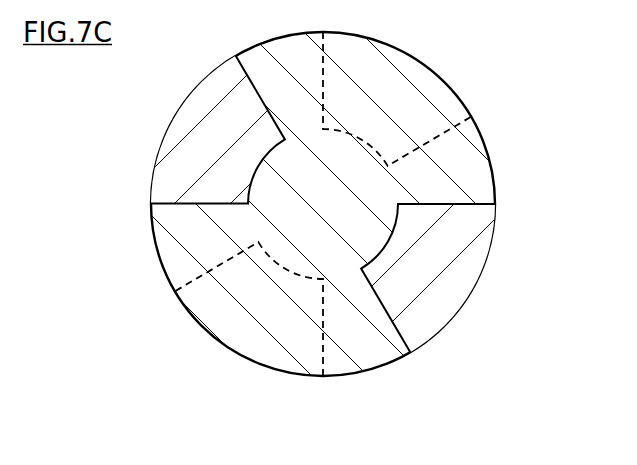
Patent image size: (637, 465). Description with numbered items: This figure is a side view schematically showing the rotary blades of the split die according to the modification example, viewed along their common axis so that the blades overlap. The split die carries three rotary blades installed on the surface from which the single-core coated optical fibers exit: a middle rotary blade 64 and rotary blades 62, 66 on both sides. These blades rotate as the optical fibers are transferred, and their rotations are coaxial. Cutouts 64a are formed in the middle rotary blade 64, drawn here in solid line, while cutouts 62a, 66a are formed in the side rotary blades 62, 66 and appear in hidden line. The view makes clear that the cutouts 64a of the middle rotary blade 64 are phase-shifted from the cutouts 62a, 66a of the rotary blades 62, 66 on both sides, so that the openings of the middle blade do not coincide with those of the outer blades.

The rotary blade 62 is at (318, 232).
The rotary blade 66 is at (458, 275).
The cutout 62a is at (382, 241).
The cutout 66a is at (433, 140).
The middle rotary blade 64 is at (240, 333).
The cutout 64a is at (203, 204).